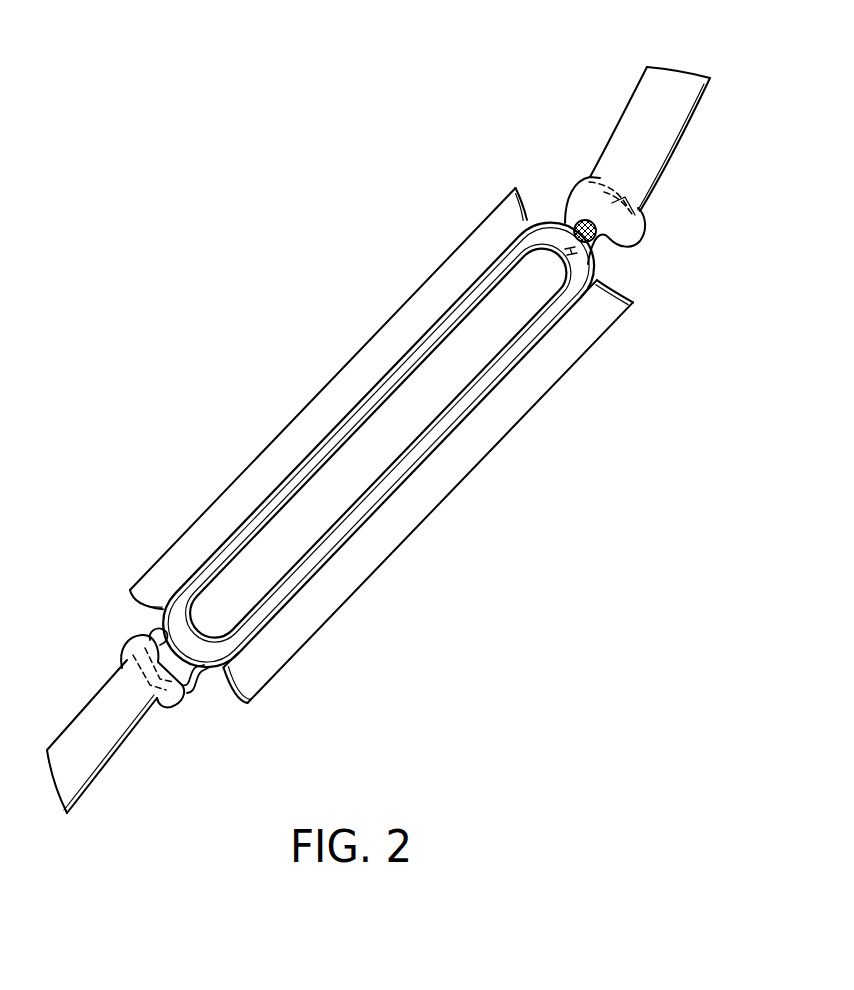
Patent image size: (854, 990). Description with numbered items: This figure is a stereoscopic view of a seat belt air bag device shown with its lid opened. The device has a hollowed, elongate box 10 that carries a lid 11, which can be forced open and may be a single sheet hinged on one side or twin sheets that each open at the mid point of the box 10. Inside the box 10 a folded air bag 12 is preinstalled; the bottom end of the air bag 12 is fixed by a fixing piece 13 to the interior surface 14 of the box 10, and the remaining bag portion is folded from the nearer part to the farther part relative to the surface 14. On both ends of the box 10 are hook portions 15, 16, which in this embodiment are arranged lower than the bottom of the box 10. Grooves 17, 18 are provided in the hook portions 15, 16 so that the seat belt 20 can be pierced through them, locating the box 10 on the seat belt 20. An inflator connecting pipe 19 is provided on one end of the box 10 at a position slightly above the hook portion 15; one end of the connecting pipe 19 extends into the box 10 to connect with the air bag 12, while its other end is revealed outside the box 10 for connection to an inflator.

The box 10 is at (205, 670).
The lid 11 is at (260, 483).
The air bag 12 is at (335, 482).
The fixing piece 13 is at (211, 563).
The interior surface 14 is at (185, 617).
The hook portion 15 is at (623, 241).
The hook portion 16 is at (130, 650).
The groove 17 is at (641, 213).
The groove 18 is at (157, 635).
The inflator connecting pipe 19 is at (579, 221).
The seat belt 20 is at (665, 143).